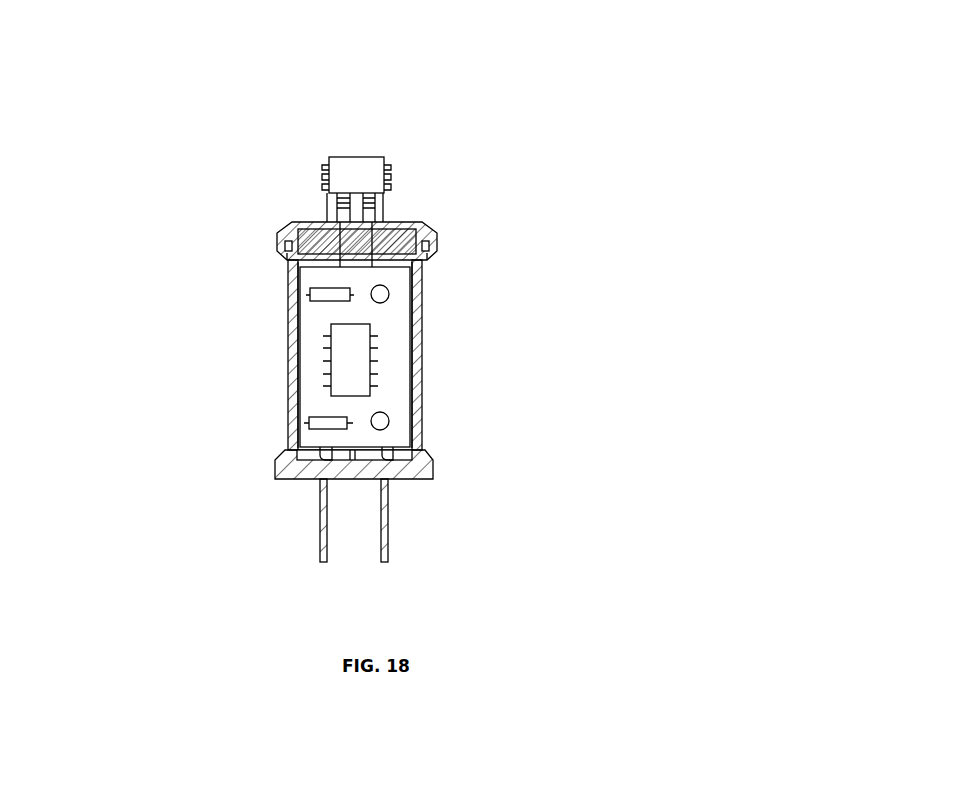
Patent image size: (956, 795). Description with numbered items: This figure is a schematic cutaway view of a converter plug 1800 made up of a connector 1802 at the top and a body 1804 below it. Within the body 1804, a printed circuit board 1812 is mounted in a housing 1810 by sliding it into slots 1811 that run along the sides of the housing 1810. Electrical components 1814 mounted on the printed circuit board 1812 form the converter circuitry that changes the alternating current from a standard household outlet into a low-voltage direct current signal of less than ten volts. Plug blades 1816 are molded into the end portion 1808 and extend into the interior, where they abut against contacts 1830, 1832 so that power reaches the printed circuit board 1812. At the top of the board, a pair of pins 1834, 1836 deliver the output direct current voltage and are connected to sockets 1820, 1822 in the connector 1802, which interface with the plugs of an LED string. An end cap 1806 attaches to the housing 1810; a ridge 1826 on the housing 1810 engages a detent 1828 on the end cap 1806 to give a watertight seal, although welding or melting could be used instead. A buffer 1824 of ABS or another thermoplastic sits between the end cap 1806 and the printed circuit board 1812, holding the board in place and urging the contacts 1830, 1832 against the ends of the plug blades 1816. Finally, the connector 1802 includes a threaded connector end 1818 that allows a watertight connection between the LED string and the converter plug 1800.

The converter plug 1800 is at (577, 160).
The connector 1802 is at (280, 152).
The body 1804 is at (253, 335).
The end cap 1806 is at (283, 242).
The end portion 1808 is at (277, 470).
The housing 1810 is at (422, 387).
The slots 1811 is at (422, 410).
The printed circuit board 1812 is at (412, 338).
The electrical components 1814 is at (395, 326).
The plug blades 1816 is at (413, 520).
The threaded connector end 1818 is at (322, 180).
The socket 1820 is at (332, 217).
The socket 1822 is at (375, 215).
The buffer 1824 is at (415, 225).
The ridge 1826 is at (287, 253).
The detent 1828 is at (433, 245).
The contact 1830 is at (325, 447).
The contact 1832 is at (393, 450).
The pin 1834 is at (340, 266).
The pin 1836 is at (389, 287).